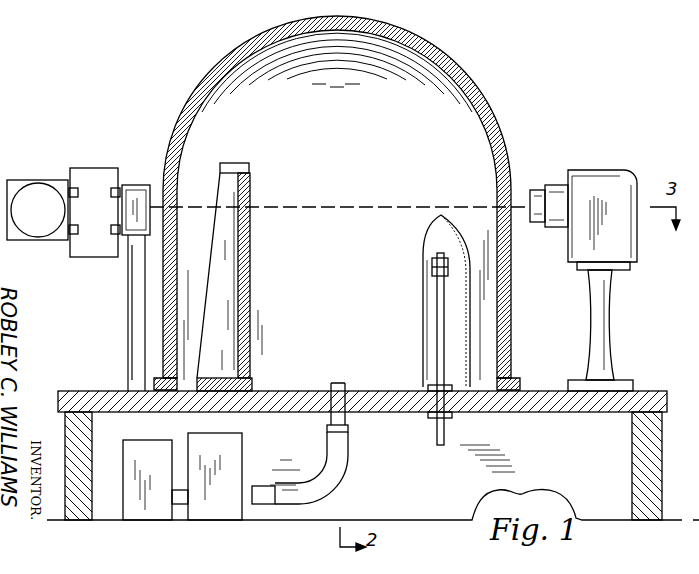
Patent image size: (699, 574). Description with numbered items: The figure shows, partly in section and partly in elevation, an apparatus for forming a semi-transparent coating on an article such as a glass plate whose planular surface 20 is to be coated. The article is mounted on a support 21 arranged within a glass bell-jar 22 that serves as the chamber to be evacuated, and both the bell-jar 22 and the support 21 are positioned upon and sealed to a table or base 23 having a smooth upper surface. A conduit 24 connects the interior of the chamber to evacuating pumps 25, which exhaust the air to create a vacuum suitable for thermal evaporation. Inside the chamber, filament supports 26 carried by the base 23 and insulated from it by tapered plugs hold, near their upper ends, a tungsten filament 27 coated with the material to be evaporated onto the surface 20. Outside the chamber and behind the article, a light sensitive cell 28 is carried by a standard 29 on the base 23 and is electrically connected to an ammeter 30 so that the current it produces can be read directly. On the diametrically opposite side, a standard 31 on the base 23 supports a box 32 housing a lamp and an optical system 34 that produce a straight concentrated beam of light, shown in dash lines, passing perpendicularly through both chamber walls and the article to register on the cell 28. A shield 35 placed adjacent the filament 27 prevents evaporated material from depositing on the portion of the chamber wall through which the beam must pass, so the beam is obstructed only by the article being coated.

The article surface to be coated 20 is at (250, 280).
The support 21 is at (212, 214).
The glass bell-jar chamber 22 is at (505, 107).
The table or base 23 is at (556, 412).
The conduit 24 is at (348, 446).
The evacuating pumps 25 is at (200, 440).
The filament supports 26 is at (437, 318).
The filament 27 is at (432, 267).
The light sensitive cell 28 is at (136, 185).
The standard 29 is at (128, 296).
The ammeter 30 is at (28, 180).
The standard 31 is at (612, 320).
The box 32 is at (606, 170).
The optical system 34 is at (549, 185).
The shield 35 is at (470, 292).